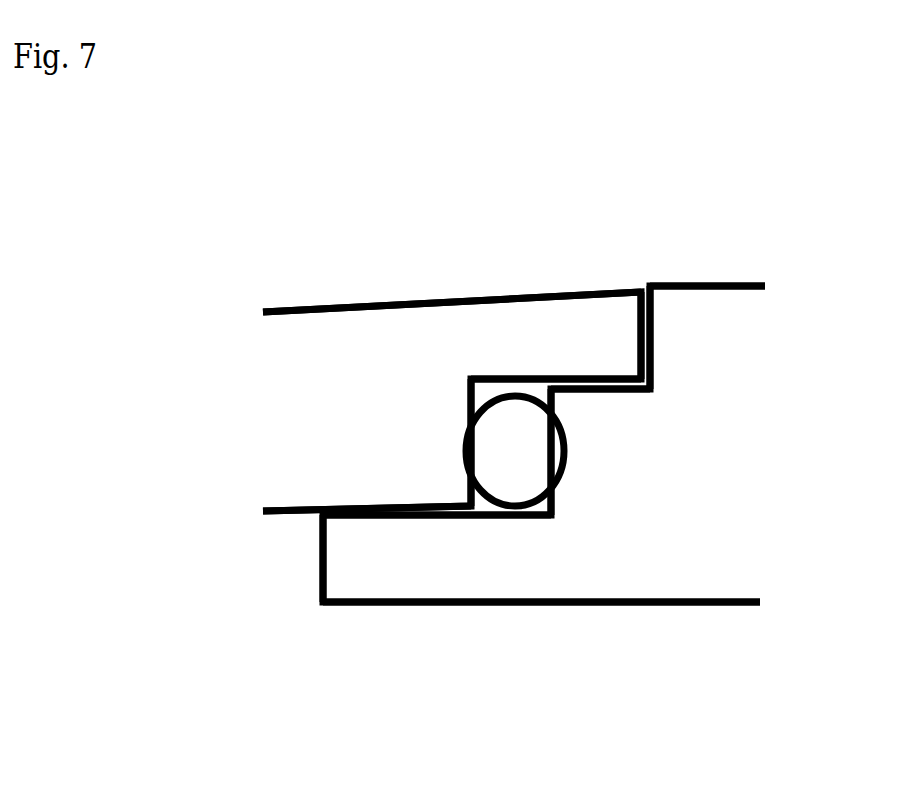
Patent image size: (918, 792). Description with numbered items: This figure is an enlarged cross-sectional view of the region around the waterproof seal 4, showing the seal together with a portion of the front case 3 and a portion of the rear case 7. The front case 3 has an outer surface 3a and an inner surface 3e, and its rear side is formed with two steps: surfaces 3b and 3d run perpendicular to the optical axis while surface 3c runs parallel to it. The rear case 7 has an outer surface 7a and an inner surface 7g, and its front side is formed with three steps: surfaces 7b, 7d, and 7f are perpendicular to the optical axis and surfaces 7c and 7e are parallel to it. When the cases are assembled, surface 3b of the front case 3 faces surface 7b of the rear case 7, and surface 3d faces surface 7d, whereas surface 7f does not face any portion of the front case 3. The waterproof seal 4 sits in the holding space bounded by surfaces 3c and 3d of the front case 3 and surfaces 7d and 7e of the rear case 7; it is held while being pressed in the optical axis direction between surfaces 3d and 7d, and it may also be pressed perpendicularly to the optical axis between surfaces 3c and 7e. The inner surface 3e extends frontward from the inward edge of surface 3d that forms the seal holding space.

The front case 3 is at (290, 353).
The outer surface 3a is at (360, 301).
The surface 3b is at (639, 334).
The surface 3c is at (533, 377).
The surface 3d is at (468, 403).
The inner surface 3e is at (293, 515).
The waterproof seal 4 is at (490, 450).
The rear case 7 is at (743, 367).
The outer surface 7a is at (748, 286).
The surface 7b is at (653, 323).
The surface 7c is at (617, 393).
The surface 7d is at (552, 500).
The surface 7e is at (473, 516).
The surface 7f is at (327, 551).
The inner surface 7g is at (658, 605).